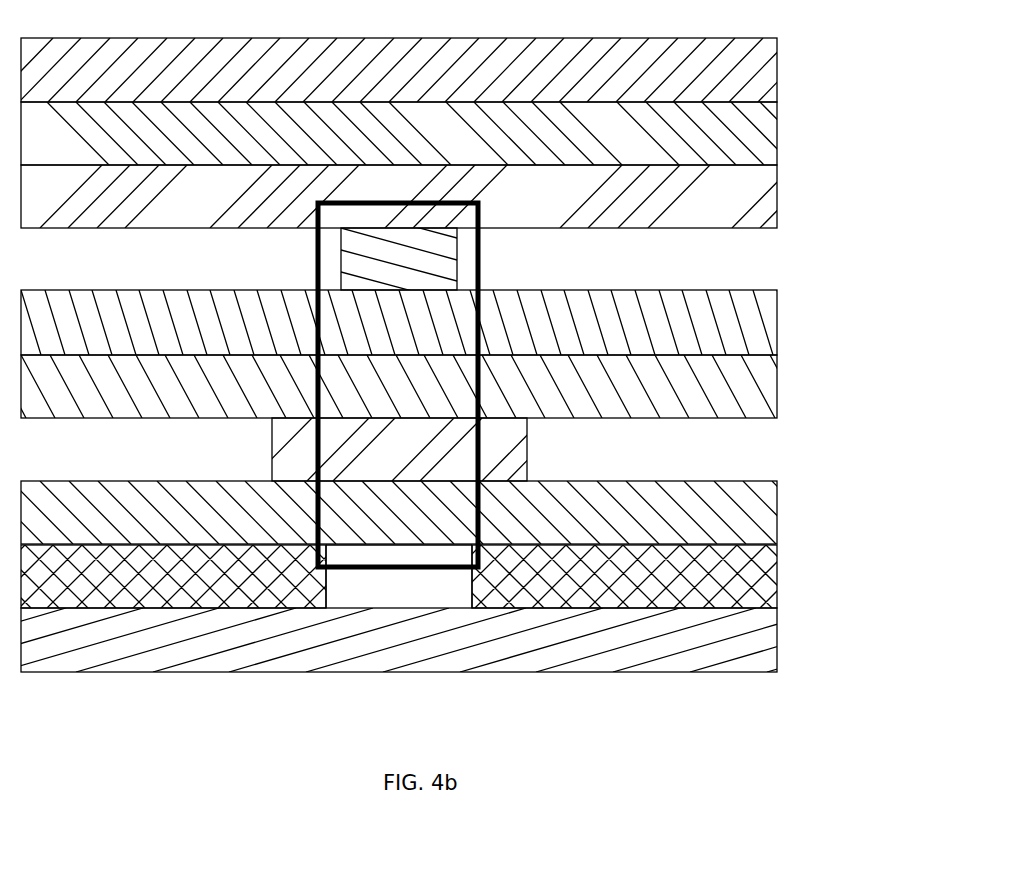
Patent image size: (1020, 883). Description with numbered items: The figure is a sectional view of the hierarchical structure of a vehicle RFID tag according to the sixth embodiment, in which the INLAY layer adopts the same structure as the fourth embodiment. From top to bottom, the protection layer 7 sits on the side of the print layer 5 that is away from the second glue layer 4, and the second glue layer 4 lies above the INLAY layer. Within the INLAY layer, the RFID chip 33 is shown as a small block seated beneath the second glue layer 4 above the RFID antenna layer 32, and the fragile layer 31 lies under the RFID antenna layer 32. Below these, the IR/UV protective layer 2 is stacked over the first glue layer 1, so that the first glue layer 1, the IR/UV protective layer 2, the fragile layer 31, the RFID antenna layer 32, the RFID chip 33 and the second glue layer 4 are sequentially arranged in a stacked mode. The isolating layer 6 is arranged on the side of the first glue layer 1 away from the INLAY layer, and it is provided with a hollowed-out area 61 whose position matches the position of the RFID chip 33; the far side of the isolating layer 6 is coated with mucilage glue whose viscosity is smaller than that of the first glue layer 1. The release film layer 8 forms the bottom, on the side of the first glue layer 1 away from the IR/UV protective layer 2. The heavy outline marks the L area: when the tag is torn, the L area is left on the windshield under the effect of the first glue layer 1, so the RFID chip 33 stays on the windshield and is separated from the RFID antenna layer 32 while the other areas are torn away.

The protection layer 7 is at (777, 70).
The print layer 5 is at (777, 132).
The second glue layer 4 is at (777, 195).
The RFID chip 33 is at (457, 260).
The RFID antenna layer 32 is at (777, 320).
The fragile layer 31 is at (777, 385).
The IR/UV protective layer 2 is at (527, 450).
The first glue layer 1 is at (777, 514).
The hollowed-out area 61 is at (463, 582).
The isolating layer 6 is at (777, 597).
The release film layer 8 is at (777, 643).
The L area L is at (400, 568).